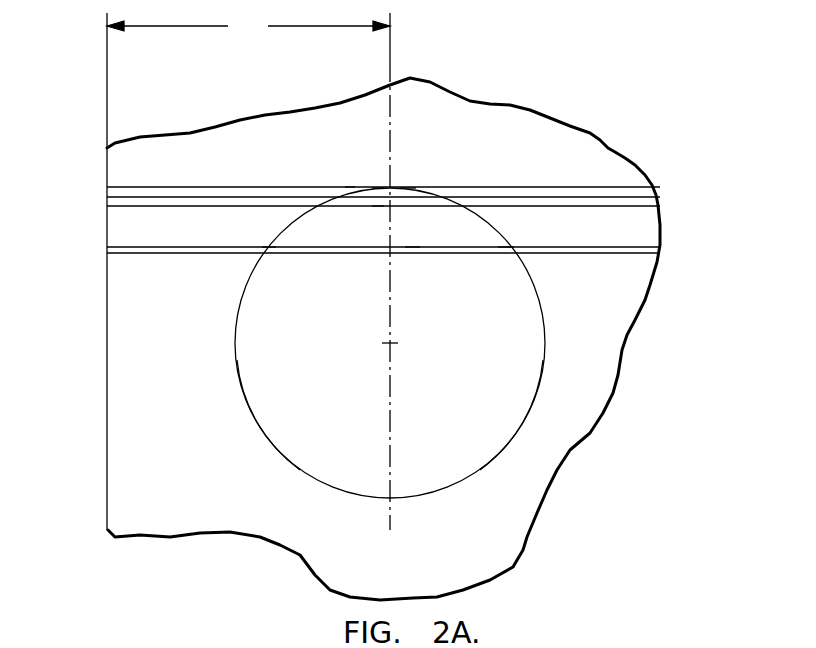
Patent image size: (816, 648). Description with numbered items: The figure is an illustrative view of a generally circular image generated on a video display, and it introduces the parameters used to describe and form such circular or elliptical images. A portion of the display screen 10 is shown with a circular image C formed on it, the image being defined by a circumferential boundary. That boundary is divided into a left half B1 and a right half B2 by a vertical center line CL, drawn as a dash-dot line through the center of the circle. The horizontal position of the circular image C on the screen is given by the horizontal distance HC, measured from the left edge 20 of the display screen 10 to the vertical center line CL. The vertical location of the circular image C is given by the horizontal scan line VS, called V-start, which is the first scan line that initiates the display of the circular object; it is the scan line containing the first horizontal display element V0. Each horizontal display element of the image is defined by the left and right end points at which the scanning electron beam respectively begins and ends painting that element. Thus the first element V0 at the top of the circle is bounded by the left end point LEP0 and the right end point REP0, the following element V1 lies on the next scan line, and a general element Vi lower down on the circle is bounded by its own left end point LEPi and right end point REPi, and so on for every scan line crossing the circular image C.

The display screen 10 is at (548, 496).
The left edge 20 is at (106, 313).
The circular image C is at (238, 385).
The left half of boundary B1 is at (266, 431).
The right half of boundary B2 is at (517, 432).
The horizontal distance HC is at (248, 30).
The vertical center line CL is at (392, 19).
The V-start horizontal scan line VS is at (660, 187).
The left end point of first horizontal element LEP0 is at (348, 187).
The first horizontal display element V0 is at (378, 187).
The right end point of first horizontal element REP0 is at (407, 188).
The left end point of horizontal element i LEPi is at (268, 246).
The second horizontal display element V1 is at (378, 204).
The horizontal display element i Vi is at (413, 246).
The right end point of horizontal element i REPi is at (505, 246).